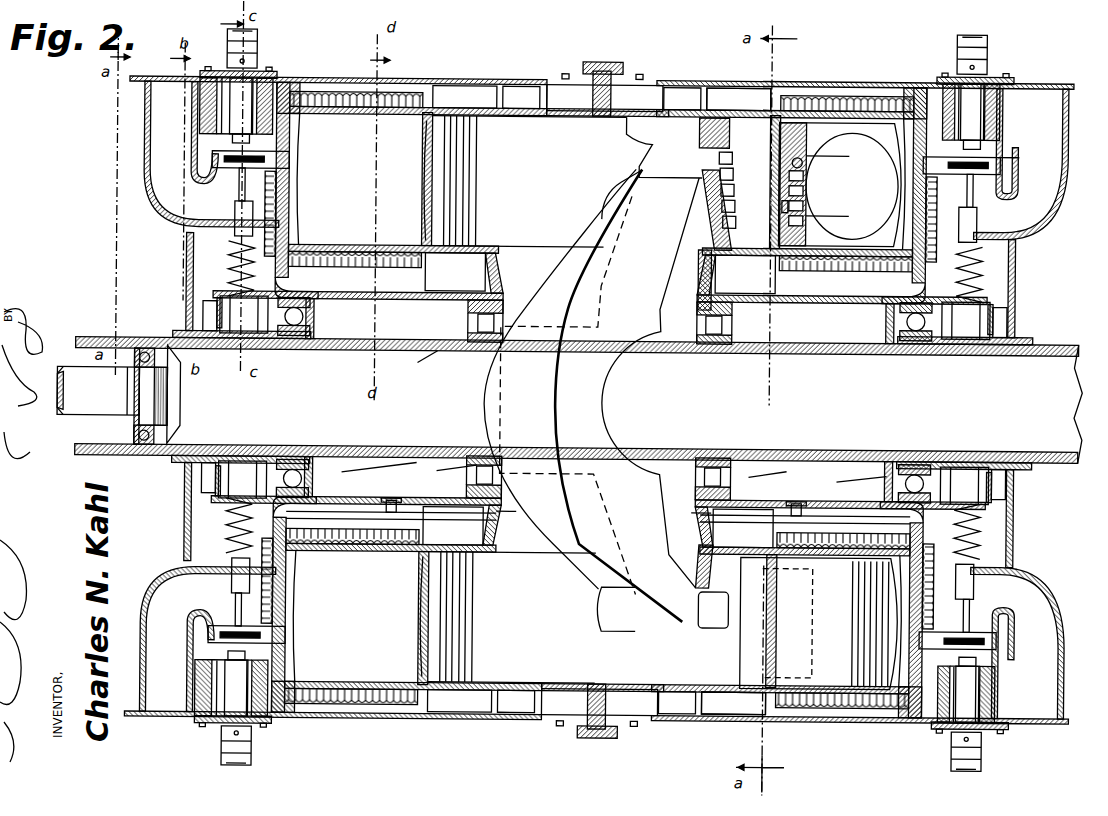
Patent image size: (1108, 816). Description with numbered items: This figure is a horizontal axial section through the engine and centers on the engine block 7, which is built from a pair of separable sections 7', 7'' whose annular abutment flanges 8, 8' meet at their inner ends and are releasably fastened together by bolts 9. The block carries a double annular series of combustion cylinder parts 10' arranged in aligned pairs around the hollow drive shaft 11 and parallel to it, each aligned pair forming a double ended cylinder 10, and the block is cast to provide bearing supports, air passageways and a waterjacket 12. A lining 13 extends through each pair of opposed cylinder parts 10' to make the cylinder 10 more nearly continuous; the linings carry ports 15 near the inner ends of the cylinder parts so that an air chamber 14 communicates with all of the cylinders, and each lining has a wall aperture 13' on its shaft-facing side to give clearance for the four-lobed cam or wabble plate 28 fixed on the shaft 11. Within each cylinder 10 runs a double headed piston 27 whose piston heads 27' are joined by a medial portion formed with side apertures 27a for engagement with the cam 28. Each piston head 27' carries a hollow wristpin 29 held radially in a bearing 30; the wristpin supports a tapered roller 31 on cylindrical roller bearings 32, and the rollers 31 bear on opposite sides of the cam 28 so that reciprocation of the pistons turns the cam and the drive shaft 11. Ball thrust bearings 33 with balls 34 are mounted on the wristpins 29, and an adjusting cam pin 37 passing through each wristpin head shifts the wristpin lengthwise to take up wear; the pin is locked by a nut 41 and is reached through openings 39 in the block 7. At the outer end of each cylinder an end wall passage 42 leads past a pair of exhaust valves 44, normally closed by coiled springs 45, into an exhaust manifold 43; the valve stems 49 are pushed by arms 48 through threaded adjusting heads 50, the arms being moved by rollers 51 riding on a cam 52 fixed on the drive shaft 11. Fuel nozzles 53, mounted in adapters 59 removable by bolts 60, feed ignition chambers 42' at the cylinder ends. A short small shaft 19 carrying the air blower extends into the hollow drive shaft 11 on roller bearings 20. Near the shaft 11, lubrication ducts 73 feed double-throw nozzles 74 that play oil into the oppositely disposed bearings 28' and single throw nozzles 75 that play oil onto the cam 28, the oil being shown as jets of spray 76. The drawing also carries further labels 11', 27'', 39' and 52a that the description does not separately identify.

The engine block 7 is at (335, 416).
The separable section of engine block 7' is at (518, 401).
The separable section of engine block 7'' is at (736, 405).
The annular abutment flange 8 is at (585, 404).
The annular abutment flange 8' is at (608, 405).
The bolts 9 is at (566, 70).
The double ended cylinder 10 is at (415, 402).
The cylinder part 10' is at (579, 435).
The drive shaft 11 is at (579, 387).
The shaft portion 11' is at (428, 366).
The waterjacket 12 is at (350, 80).
The lining 13 is at (526, 400).
The wall aperture 13' is at (516, 398).
The air chamber 14 is at (470, 95).
The ports 15 is at (432, 112).
The short small shaft 19 is at (60, 405).
The roller bearings 20 is at (138, 437).
The double headed piston 27 is at (496, 399).
The piston head 27' is at (662, 401).
The piston ring section 27'' is at (842, 368).
The side apertures 27a is at (604, 602).
The four-lobed cam 28 is at (590, 395).
The bearings 28' is at (580, 321).
The hollow wristpin 29 is at (821, 405).
The bearing 30 is at (716, 240).
The tapered roller 31 is at (626, 170).
The cylindrical roller bearings 32 is at (782, 208).
The ball thrust bearing 33 is at (703, 165).
The balls 34 is at (804, 157).
The adjusting cam pin 37 is at (703, 130).
The openings 39 is at (590, 404).
The cover edge 39' is at (540, 72).
The nut 41 is at (700, 120).
The end wall passage 42 is at (631, 409).
The ignition chamber 42' is at (1010, 144).
The exhaust manifold 43 is at (172, 195).
The exhaust valve 44 is at (210, 150).
The coiled spring 45 is at (1017, 258).
The arms 48 is at (235, 312).
The valve stem 49 is at (240, 197).
The adjusting head 50 is at (230, 270).
The rollers 51 is at (232, 296).
The cam 52 is at (200, 350).
The ball bearing 52a is at (200, 328).
The fuel nozzle 53 is at (255, 80).
The adapter 59 is at (212, 100).
The bolts 60 is at (208, 70).
The lubrication ducts 73 is at (598, 520).
The double-throw nozzles 74 is at (595, 486).
The single throw nozzles 75 is at (603, 504).
The jets of oil spray 76 is at (605, 494).